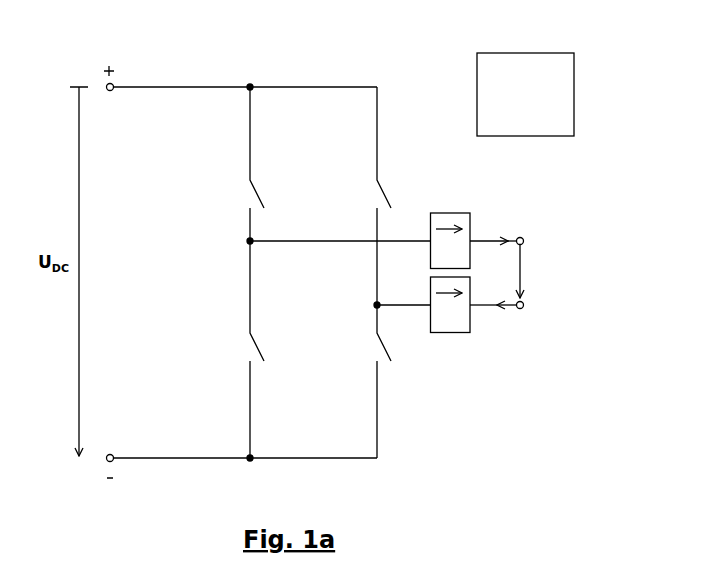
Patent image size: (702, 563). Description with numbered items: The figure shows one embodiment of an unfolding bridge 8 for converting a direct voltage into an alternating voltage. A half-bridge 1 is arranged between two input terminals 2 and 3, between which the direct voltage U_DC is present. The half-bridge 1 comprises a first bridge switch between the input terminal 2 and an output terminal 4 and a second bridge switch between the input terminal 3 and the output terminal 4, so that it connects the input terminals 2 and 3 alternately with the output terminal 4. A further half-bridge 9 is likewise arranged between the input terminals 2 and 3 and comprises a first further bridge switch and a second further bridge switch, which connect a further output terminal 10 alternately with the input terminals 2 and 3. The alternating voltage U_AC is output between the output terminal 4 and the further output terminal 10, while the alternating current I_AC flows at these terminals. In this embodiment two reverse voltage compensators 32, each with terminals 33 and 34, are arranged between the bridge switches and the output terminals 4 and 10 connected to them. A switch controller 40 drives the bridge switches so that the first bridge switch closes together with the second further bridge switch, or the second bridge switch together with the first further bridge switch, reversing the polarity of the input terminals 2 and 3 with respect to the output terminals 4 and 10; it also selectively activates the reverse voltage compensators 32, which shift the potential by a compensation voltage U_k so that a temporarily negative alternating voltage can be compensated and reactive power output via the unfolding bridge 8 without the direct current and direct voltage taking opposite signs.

The half-bridge 1 is at (257, 50).
The input terminal 2 is at (104, 85).
The input terminal 3 is at (104, 461).
The output terminal 4 is at (524, 239).
The unfolding bridge 8 is at (435, 66).
The further half-bridge 9 is at (385, 60).
The further output terminal 10 is at (524, 308).
The reverse voltage compensator 32 is at (451, 212).
The terminal of reverse voltage compensator 33 is at (405, 240).
The terminal of reverse voltage compensator 34 is at (475, 240).
The switch controller 40 is at (527, 53).